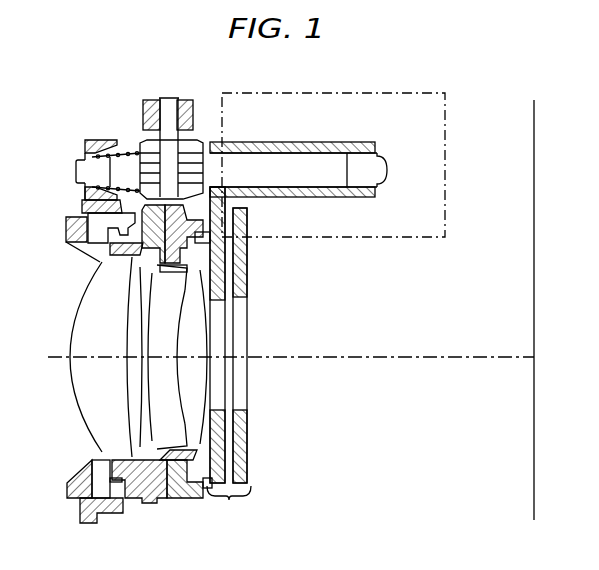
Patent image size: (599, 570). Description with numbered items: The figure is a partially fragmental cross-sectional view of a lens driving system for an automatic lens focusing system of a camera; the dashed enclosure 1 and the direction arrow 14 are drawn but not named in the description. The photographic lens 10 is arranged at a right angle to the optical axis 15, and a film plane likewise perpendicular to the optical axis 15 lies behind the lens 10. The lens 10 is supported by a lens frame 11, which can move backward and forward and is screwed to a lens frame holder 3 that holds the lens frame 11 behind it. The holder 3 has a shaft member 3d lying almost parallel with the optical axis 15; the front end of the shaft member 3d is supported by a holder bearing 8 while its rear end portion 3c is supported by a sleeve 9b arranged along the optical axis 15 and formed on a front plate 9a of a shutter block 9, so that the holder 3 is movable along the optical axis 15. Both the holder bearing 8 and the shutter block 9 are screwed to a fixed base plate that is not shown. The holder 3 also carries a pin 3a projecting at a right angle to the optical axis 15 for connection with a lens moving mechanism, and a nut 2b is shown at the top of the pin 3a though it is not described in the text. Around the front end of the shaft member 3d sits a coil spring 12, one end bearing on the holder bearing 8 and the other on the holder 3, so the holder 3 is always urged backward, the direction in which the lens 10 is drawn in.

The drive unit (dashed enclosure) 1 is at (419, 92).
The nut 2b is at (148, 99).
The lens frame holder 3 is at (181, 147).
The pin 3a is at (168, 99).
The rear end portion 3c is at (386, 168).
The shaft member 3d is at (325, 175).
The holder bearing 8 is at (108, 140).
The shutter block 9 is at (229, 365).
The front plate 9a is at (222, 392).
The sleeve 9b is at (320, 148).
The photographic lens 10 is at (86, 292).
The lens frame 11 is at (147, 257).
The coil spring 12 is at (128, 157).
The image plane / light direction 14 is at (514, 149).
The optical axis 15 is at (333, 356).